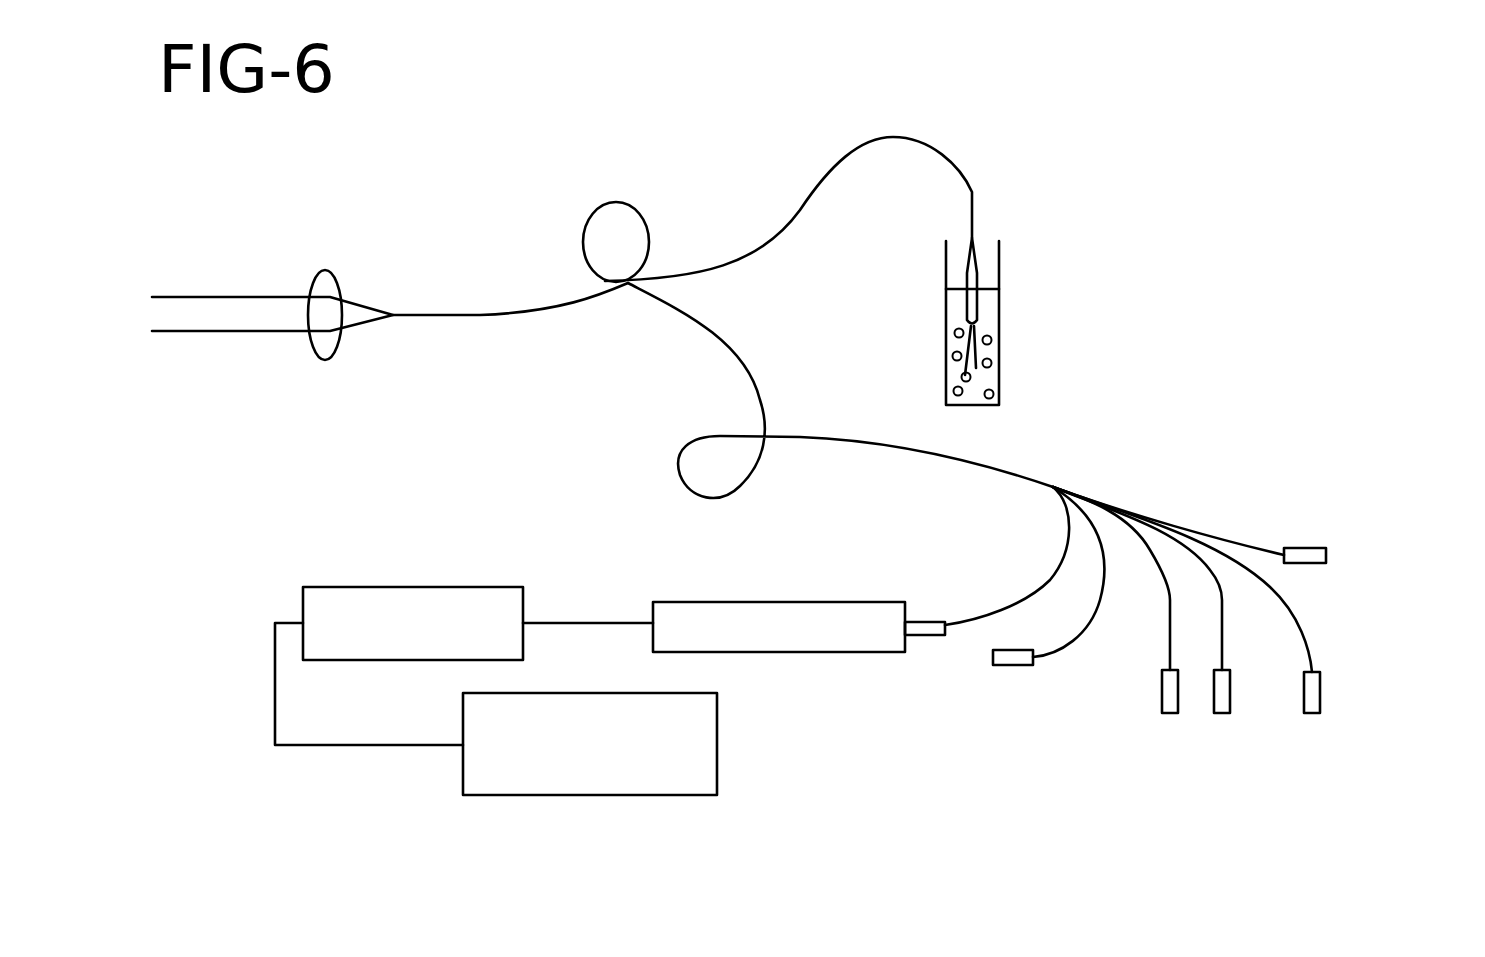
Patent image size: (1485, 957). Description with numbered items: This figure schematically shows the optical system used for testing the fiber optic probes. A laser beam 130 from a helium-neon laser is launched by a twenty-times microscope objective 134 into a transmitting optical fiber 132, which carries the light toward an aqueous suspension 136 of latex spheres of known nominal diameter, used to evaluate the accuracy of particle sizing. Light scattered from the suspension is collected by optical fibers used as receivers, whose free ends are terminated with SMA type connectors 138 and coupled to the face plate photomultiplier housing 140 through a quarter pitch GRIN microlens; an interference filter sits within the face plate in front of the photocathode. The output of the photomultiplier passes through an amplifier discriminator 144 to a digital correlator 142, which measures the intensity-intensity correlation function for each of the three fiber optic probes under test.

The laser beam 130 is at (240, 295).
The transmitting optical fiber 132 is at (540, 307).
The microscope objective 134 is at (312, 348).
The aqueous suspension 136 is at (993, 350).
The connectors 138 is at (1162, 687).
The photomultiplier housing 140 is at (790, 602).
The digital correlator 142 is at (462, 770).
The amplifier discriminator 144 is at (445, 587).